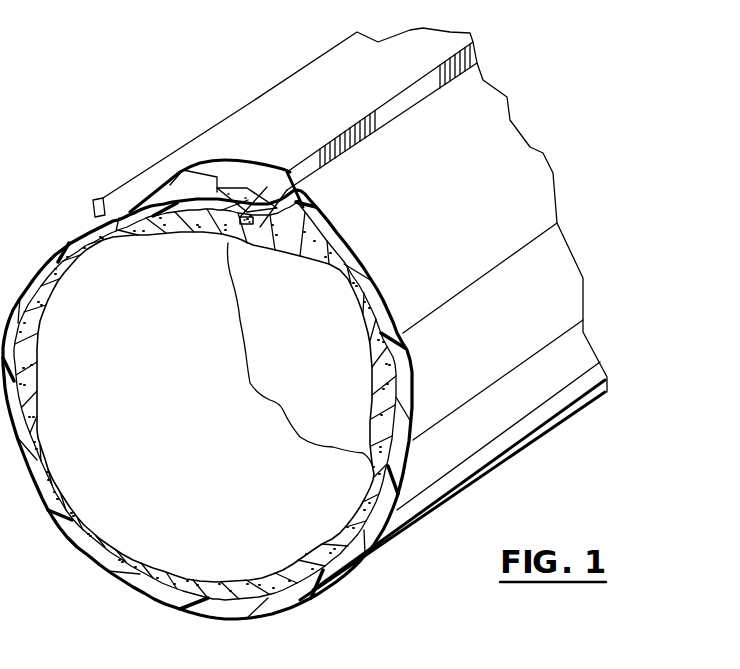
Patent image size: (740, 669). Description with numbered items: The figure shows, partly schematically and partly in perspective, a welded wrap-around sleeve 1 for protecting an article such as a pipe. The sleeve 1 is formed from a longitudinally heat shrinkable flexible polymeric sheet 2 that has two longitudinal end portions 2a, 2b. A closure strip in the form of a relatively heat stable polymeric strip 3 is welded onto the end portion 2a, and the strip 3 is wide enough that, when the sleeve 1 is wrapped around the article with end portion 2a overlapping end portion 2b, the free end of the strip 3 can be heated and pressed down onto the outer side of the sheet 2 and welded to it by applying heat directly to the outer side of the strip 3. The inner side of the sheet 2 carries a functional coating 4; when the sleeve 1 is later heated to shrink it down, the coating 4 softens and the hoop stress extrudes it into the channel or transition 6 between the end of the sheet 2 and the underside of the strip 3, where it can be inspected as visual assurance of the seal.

The wrap-around sleeve 1 is at (577, 223).
The longitudinally heat shrinkable flexible polymeric sheet 2 is at (522, 165).
The longitudinal end portion 2a is at (278, 200).
The longitudinal end portion 2b is at (253, 233).
The polymeric strip 3 is at (198, 165).
The functional coating 4 is at (163, 583).
The channel 6 is at (200, 180).